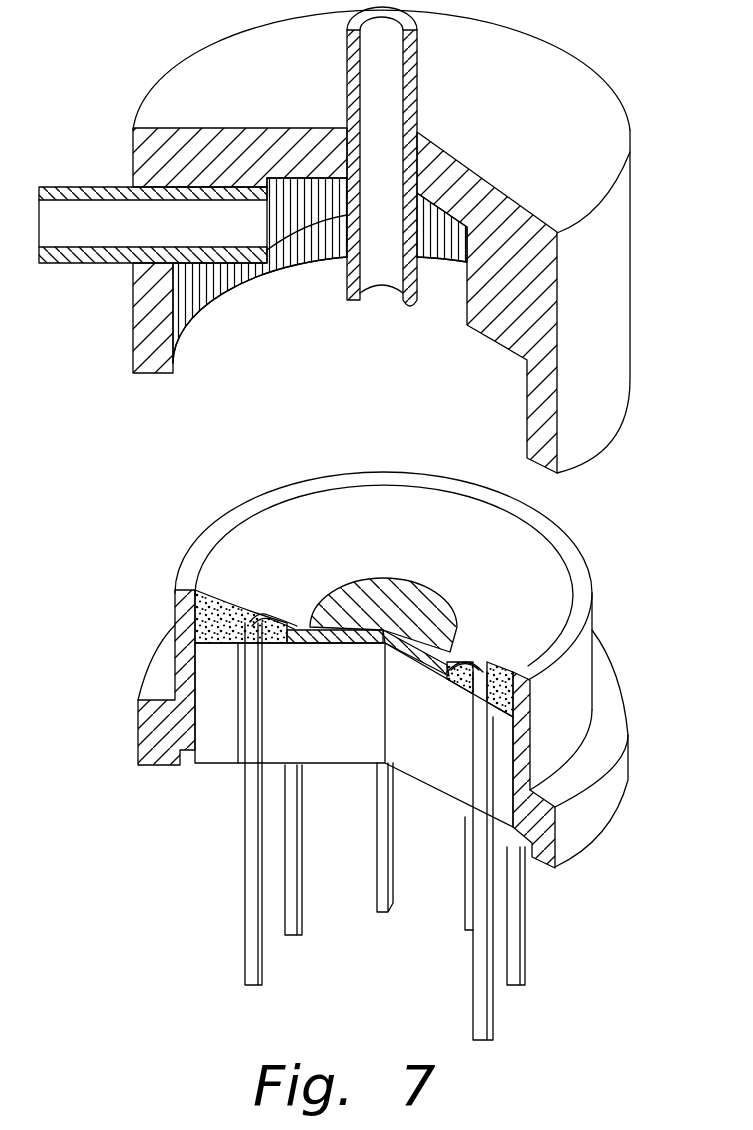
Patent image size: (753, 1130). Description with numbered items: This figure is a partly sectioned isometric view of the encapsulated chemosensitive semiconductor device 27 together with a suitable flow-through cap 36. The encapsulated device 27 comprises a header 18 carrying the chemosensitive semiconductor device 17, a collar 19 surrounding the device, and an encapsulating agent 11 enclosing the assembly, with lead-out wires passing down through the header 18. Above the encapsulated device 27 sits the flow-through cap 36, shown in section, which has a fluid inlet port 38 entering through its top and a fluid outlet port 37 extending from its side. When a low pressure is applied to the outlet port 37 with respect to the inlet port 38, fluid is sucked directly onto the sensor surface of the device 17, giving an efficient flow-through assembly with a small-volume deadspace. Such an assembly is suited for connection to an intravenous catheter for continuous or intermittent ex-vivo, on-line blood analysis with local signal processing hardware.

The encapsulating agent 11 is at (538, 588).
The device 17 is at (403, 594).
The header 18 is at (338, 718).
The collar 19 is at (185, 622).
The encapsulated device 27 is at (215, 765).
The flow-through cap 36 is at (140, 335).
The fluid outlet port 37 is at (75, 187).
The fluid inlet port 38 is at (420, 67).